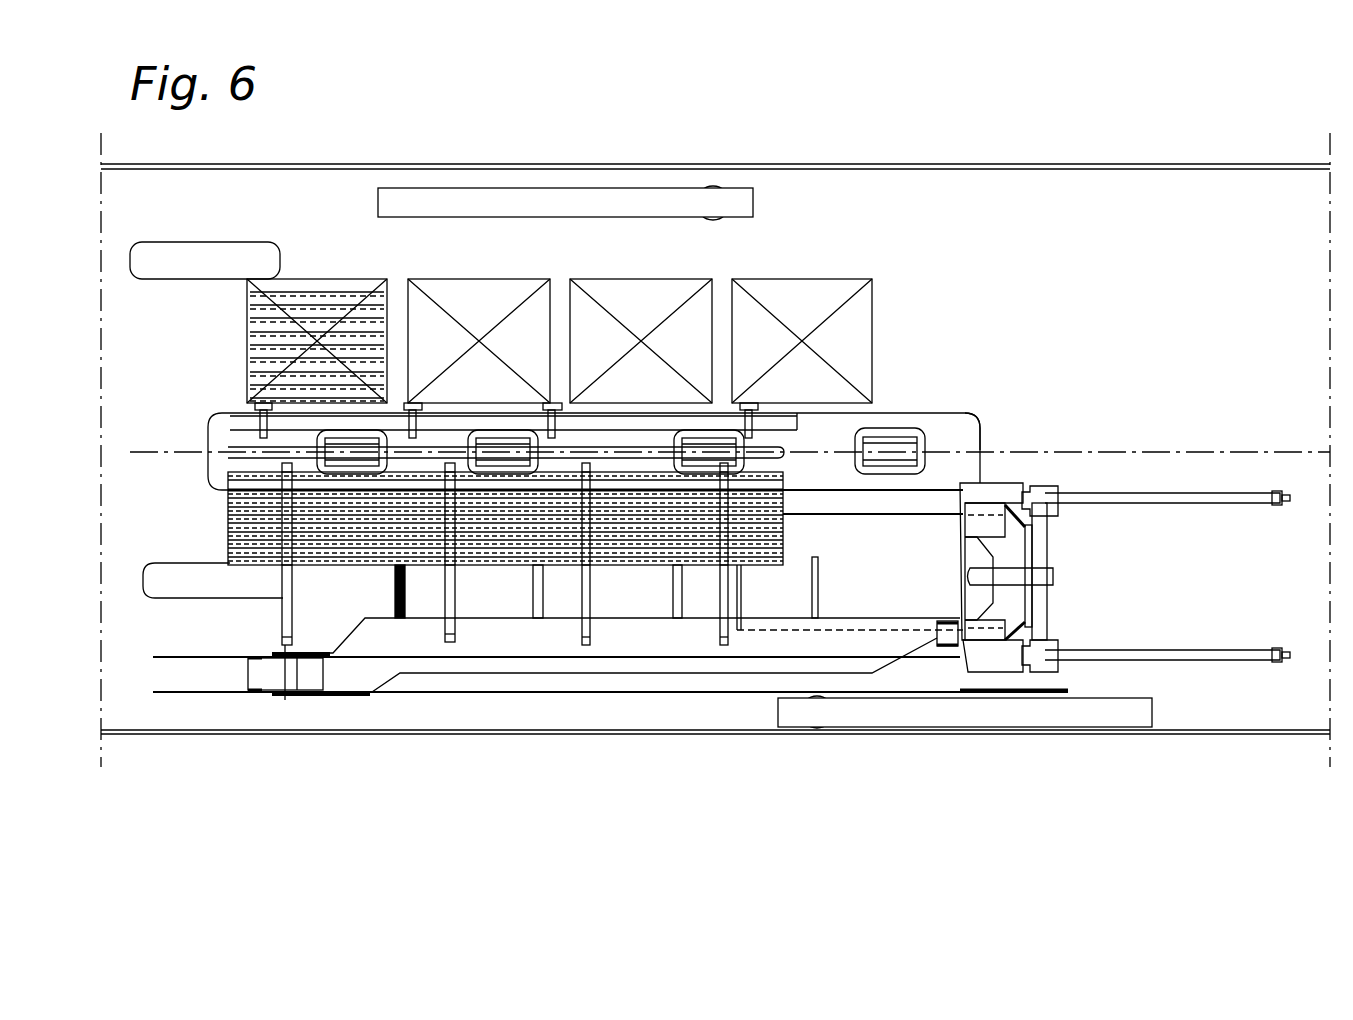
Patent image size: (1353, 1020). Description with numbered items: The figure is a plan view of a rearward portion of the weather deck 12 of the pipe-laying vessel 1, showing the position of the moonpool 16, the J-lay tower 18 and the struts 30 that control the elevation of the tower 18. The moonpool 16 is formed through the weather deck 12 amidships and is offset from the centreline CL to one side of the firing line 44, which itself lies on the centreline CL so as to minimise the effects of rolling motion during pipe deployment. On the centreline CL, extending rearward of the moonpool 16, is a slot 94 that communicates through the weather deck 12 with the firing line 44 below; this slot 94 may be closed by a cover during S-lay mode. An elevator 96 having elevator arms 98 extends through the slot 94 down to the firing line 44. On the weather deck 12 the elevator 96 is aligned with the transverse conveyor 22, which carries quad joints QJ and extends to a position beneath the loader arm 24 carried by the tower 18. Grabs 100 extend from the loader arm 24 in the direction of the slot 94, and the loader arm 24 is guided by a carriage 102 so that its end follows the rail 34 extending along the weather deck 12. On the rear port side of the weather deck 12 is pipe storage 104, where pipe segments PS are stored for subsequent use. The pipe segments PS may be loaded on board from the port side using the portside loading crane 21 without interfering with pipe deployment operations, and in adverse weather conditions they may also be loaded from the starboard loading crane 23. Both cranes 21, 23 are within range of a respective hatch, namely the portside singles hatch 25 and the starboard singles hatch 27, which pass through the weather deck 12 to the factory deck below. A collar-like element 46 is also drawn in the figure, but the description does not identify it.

The pipe-laying vessel 1 is at (1052, 103).
The weather deck 12 is at (1227, 703).
The moonpool 16 is at (888, 568).
The J-lay tower 18 is at (997, 662).
The portside loading crane 21 is at (675, 200).
The transverse conveyor 22 is at (330, 568).
The starboard loading crane 23 is at (822, 710).
The loader arm 24 is at (518, 668).
The portside singles hatch 25 is at (155, 258).
The starboard singles hatch 27 is at (172, 580).
The struts 30 is at (1058, 657).
The rail 34 is at (195, 660).
The firing line 44 is at (946, 450).
The collar 46 is at (895, 433).
The slot 94 is at (980, 435).
The elevator 96 is at (550, 412).
The elevator arms 98 is at (567, 418).
The grabs 100 is at (540, 595).
The carriage 102 is at (270, 680).
The pipe storage 104 is at (458, 290).
The pipe segments PS is at (305, 290).
The centreline CL is at (140, 440).
The quad joint QJ is at (241, 572).